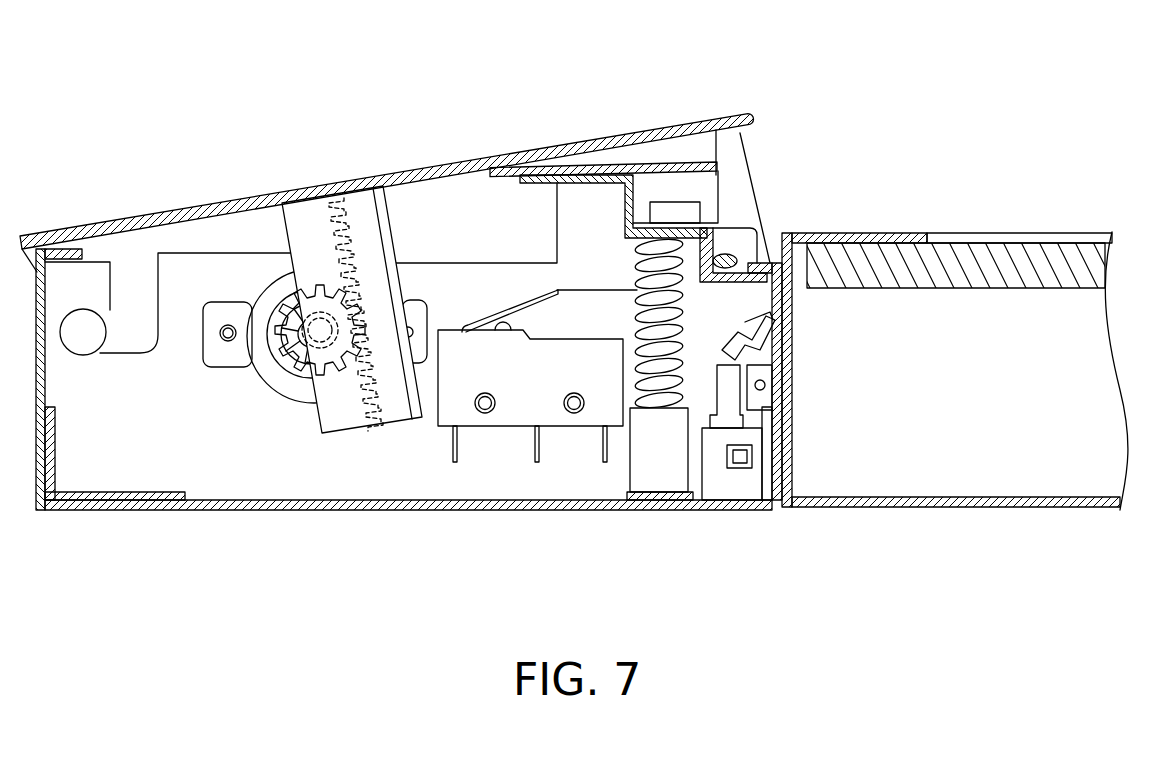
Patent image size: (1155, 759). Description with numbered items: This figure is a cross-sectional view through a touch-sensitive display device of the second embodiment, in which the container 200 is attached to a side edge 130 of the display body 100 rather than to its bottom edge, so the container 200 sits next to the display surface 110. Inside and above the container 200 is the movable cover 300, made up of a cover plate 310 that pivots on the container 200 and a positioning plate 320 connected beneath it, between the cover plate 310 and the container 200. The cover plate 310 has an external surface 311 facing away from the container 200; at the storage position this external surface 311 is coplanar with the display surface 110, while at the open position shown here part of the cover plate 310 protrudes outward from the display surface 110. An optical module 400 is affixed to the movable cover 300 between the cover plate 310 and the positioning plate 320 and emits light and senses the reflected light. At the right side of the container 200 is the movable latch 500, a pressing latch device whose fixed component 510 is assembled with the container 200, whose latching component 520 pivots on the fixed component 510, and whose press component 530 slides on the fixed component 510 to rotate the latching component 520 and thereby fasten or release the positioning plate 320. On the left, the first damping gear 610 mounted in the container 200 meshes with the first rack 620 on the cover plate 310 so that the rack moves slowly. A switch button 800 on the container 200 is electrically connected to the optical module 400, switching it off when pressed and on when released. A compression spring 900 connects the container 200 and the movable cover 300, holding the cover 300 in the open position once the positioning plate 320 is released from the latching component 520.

The display body 100 is at (951, 380).
The display surface 110 is at (983, 226).
The side edge 130 is at (781, 226).
The container 200 is at (125, 507).
The movable cover 300 is at (387, 155).
The cover plate 310 is at (576, 148).
The external surface 311 is at (533, 148).
The positioning plate 320 is at (662, 230).
The optical module 400 is at (733, 185).
The movable latch 500 is at (744, 459).
The fixed component 510 is at (740, 485).
The latching component 520 is at (765, 330).
The press component 530 is at (727, 395).
The first damping gear 610 is at (300, 332).
The first rack 620 is at (357, 212).
The switch button 800 is at (515, 395).
The compression spring 900 is at (637, 358).